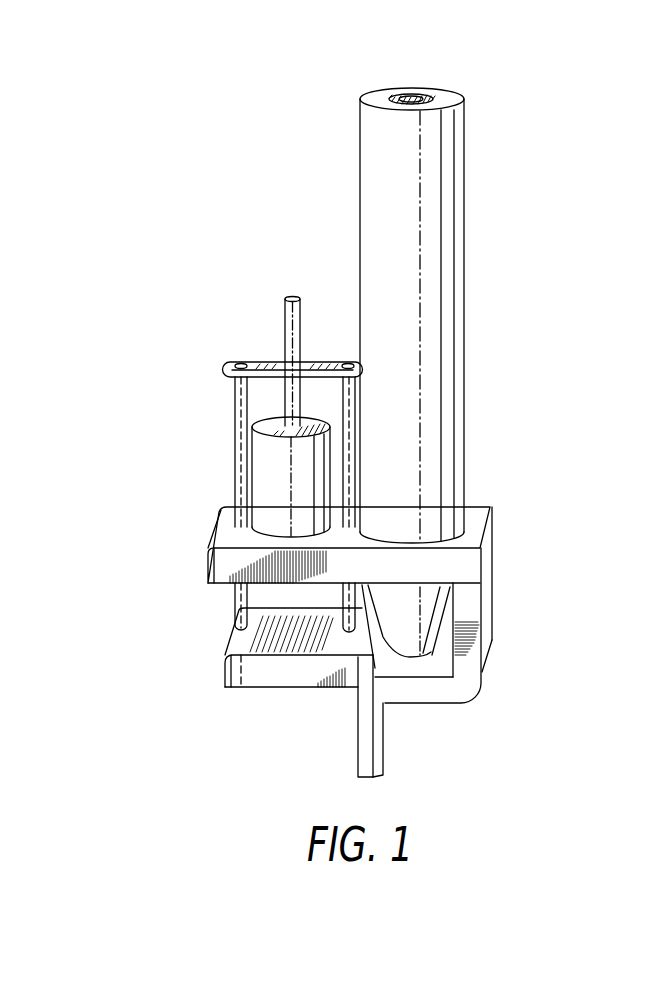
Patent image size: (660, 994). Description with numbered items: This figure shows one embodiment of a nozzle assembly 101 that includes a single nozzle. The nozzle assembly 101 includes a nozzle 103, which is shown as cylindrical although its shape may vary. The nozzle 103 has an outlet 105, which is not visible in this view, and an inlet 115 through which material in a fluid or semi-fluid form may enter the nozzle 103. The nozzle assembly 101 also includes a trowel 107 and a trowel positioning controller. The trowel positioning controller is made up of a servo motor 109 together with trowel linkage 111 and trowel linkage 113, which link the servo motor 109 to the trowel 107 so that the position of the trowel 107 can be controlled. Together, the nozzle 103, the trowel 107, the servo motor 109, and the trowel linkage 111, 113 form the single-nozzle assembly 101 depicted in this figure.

The nozzle assembly 101 is at (488, 286).
The nozzle 103 is at (465, 459).
The outlet 105 is at (428, 703).
The trowel 107 is at (357, 732).
The servo motor 109 is at (258, 463).
The trowel linkage 111 is at (233, 600).
The trowel linkage 113 is at (248, 628).
The inlet 115 is at (412, 98).